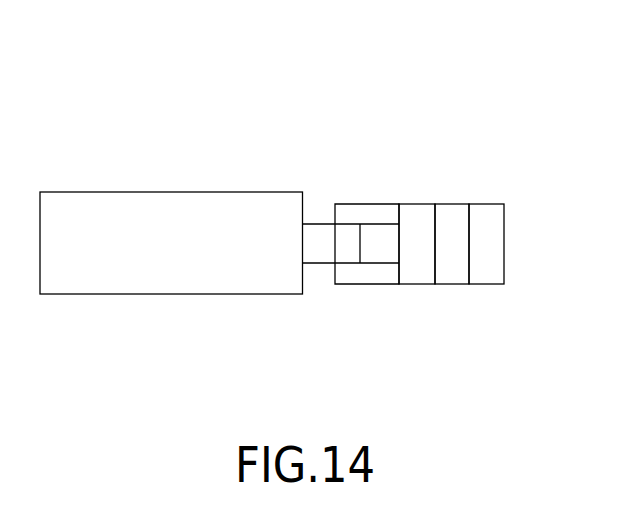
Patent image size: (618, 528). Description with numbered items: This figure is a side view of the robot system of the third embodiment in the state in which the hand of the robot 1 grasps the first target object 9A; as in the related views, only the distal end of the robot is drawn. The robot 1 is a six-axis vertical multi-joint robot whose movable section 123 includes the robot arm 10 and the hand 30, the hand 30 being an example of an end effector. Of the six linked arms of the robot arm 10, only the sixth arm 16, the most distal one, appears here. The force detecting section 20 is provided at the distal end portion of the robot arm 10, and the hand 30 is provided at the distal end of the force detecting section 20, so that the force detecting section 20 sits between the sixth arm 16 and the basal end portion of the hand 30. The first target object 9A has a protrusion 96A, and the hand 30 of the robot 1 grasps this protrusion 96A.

The robot 1 is at (482, 94).
The first target object 9A is at (186, 171).
The protrusion 96A is at (319, 240).
The movable section 123 is at (506, 123).
The robot arm 10 is at (521, 167).
The hand 30 is at (418, 305).
The force detecting section 20 is at (452, 305).
The sixth arm 16 is at (486, 267).